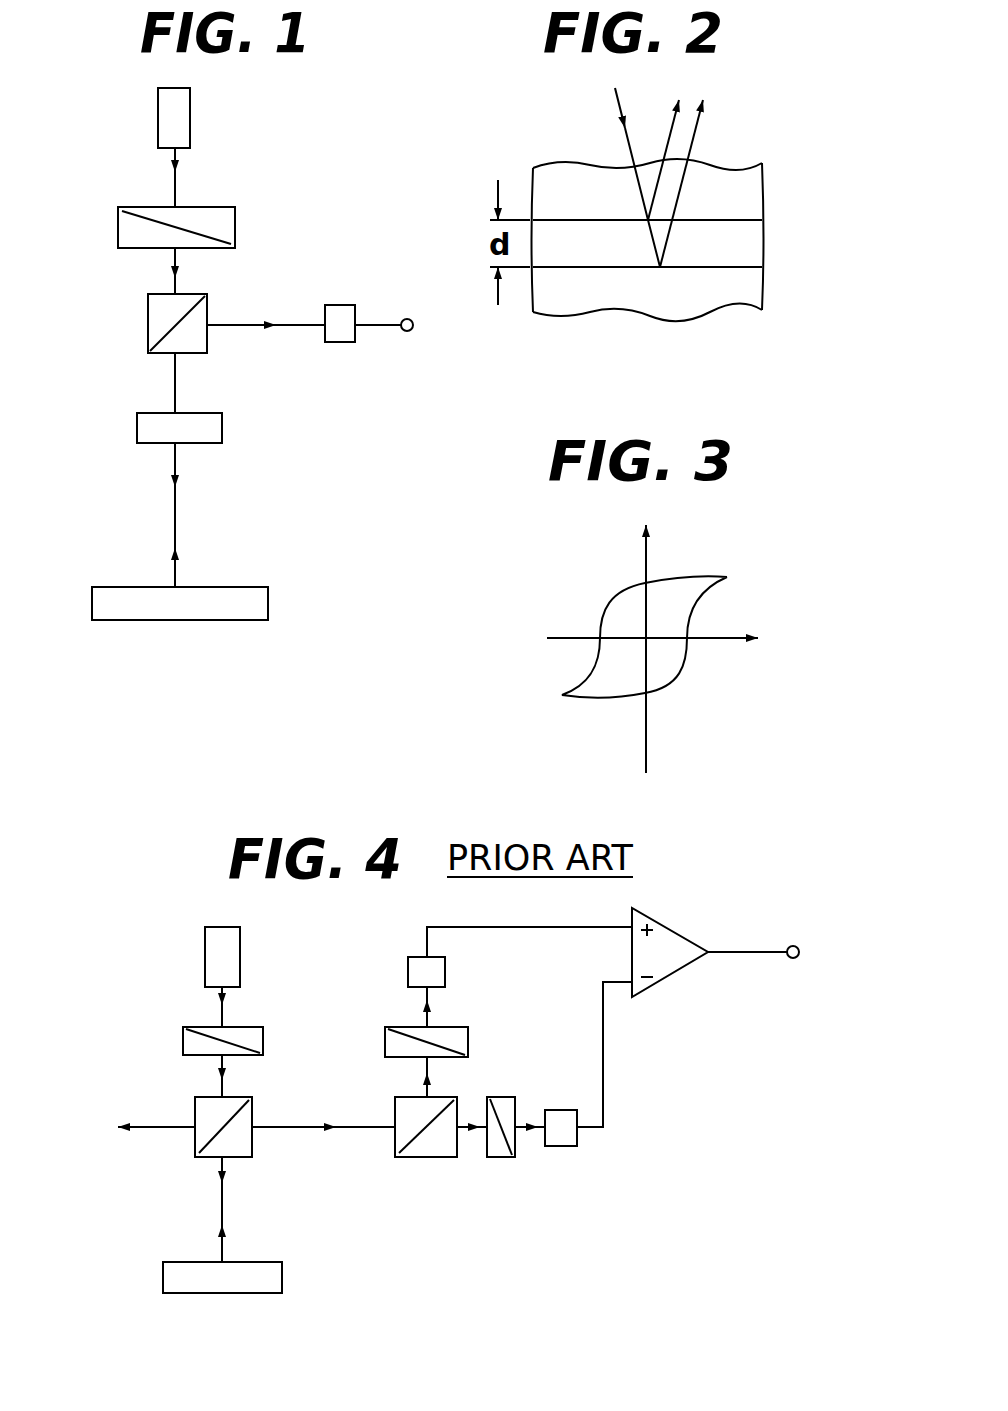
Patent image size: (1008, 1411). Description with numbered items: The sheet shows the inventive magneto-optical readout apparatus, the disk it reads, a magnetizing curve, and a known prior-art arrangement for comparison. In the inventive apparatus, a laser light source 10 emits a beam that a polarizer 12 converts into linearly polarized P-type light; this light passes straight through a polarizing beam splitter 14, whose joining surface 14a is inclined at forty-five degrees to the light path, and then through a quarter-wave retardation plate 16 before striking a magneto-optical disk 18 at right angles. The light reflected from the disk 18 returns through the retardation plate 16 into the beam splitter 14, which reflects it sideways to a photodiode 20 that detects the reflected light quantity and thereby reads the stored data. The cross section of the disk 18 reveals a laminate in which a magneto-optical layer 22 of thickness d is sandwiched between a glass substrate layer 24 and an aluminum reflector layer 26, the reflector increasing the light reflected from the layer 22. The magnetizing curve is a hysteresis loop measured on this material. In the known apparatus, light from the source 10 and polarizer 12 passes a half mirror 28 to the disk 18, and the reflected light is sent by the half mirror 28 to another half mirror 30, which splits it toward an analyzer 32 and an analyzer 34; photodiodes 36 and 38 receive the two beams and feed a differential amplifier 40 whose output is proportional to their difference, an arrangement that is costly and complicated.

In FIG. 1, the laser light source 10 is at (190, 117).
In FIG. 4, the laser light source 10 is at (205, 955).
In FIG. 1, the polarizer 12 is at (118, 230).
In FIG. 4, the polarizer 12 is at (183, 1040).
In FIG. 1, the polarizing beam splitter 14 is at (155, 305).
In FIG. 1, the joining surface 14a is at (163, 335).
In FIG. 1, the quarter-wave retardation plate 16 is at (137, 430).
In FIG. 1, the magneto-optical disk 18 is at (98, 602).
In FIG. 2, the magneto-optical disk 18 is at (512, 148).
In FIG. 4, the magneto-optical disk 18 is at (170, 1275).
In FIG. 1, the photodiode 20 is at (340, 305).
In FIG. 2, the magneto-optical layer 22 is at (747, 245).
In FIG. 2, the glass substrate layer 24 is at (747, 198).
In FIG. 2, the aluminum reflector layer 26 is at (747, 290).
In FIG. 4, the half mirror 28 is at (197, 1110).
In FIG. 4, the half mirror 30 is at (435, 1157).
In FIG. 4, the analyzer 32 is at (500, 1157).
In FIG. 4, the analyzer 34 is at (385, 1042).
In FIG. 4, the photodiode 36 is at (563, 1146).
In FIG. 4, the photodiode 38 is at (408, 970).
In FIG. 4, the differential amplifier 40 is at (684, 945).